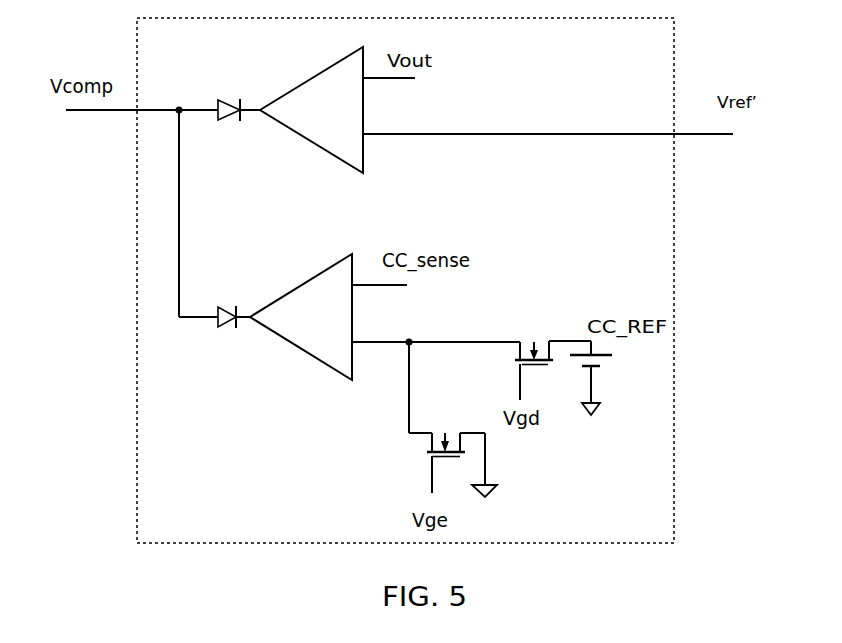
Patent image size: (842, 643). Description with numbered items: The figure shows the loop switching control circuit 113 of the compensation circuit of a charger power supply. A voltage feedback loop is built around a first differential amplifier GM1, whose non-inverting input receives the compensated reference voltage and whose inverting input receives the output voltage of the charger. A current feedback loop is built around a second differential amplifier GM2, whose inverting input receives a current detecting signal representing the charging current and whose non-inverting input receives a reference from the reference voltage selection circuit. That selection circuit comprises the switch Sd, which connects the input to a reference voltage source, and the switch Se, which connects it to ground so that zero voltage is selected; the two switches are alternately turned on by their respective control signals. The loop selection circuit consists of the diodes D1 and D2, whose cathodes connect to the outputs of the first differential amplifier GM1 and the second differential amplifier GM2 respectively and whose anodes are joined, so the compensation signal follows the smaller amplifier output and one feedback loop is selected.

The loop switching control circuit 113 is at (230, 510).
The diode D1 is at (238, 97).
The diode D2 is at (231, 300).
The first differential amplifier GM1 is at (311, 110).
The second differential amplifier GM2 is at (301, 317).
The switch Sd is at (553, 352).
The switch Se is at (456, 446).